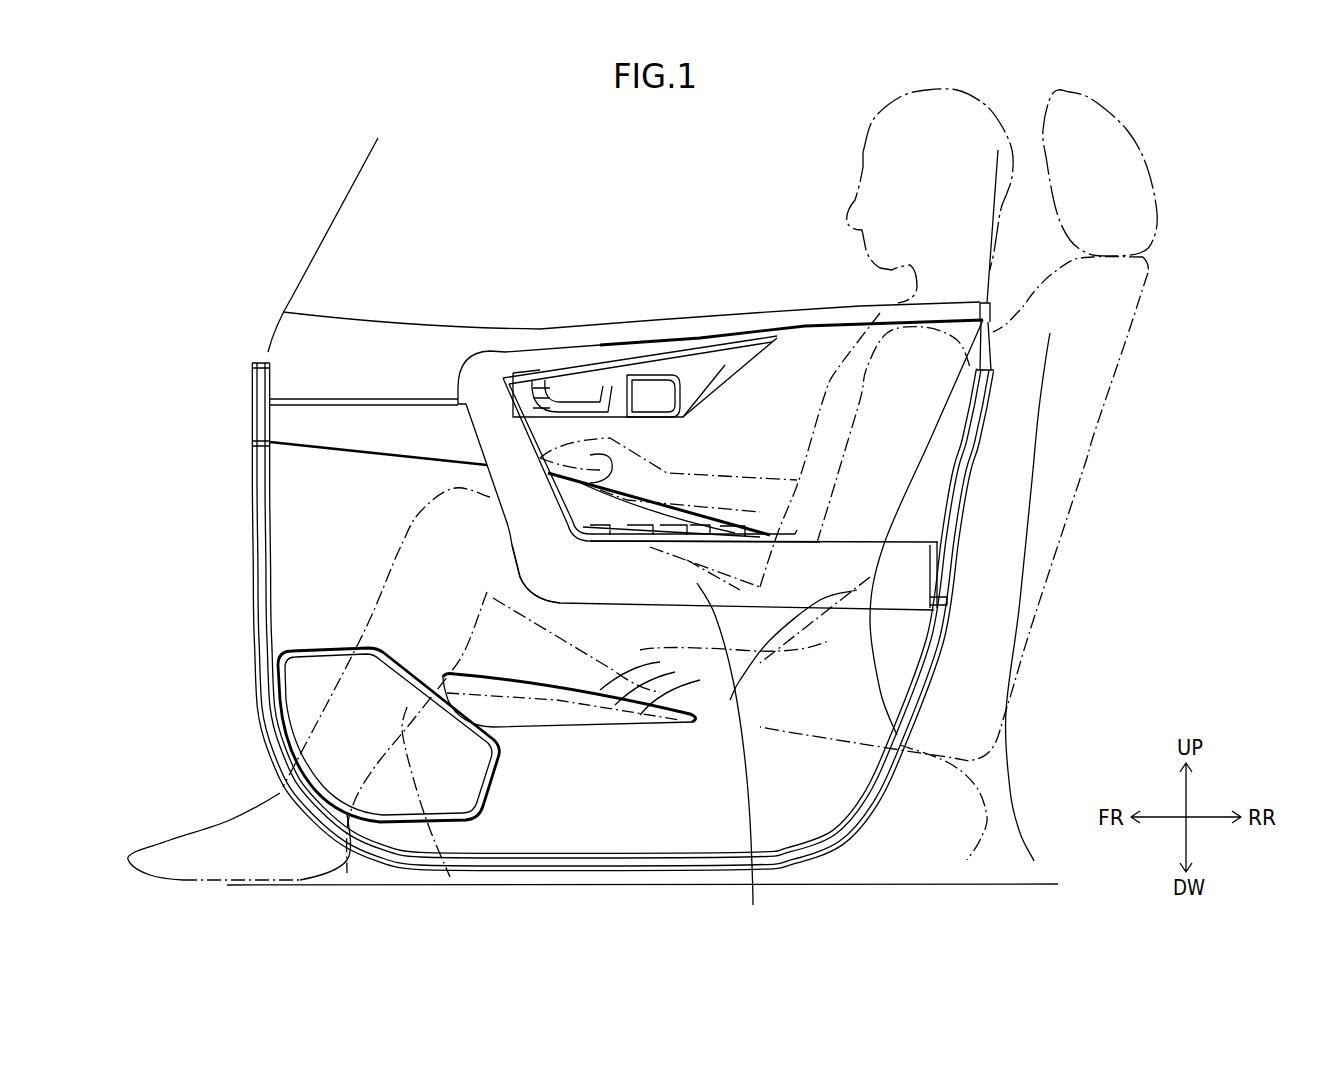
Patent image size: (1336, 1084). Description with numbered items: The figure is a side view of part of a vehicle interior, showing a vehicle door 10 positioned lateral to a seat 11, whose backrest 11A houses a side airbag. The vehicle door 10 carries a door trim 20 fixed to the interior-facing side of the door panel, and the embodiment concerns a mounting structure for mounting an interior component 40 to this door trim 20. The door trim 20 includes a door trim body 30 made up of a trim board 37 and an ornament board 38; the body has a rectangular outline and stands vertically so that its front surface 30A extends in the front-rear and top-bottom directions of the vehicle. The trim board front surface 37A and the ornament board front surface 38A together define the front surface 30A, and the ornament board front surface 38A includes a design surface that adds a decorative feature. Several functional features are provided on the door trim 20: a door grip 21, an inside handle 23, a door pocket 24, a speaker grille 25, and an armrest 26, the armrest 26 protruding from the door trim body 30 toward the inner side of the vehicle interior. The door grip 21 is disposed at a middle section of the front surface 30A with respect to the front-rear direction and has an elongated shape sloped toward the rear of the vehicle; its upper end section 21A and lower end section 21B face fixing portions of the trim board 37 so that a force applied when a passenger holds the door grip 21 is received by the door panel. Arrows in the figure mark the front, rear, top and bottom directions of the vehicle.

The vehicle door 10 is at (222, 195).
The seat 11 is at (1155, 326).
The backrest 11A is at (1087, 420).
The door trim 20 is at (228, 371).
The door grip 21 is at (468, 478).
The upper end section 21A is at (485, 415).
The lower end section 21B is at (513, 580).
The inside handle 23 is at (597, 405).
The door pocket 24 is at (535, 722).
The speaker grille 25 is at (455, 772).
The armrest 26 is at (900, 545).
The door trim body 30 is at (832, 233).
The front surface 30A is at (703, 233).
The trim board 37 is at (738, 291).
The trim board front surface 37A is at (623, 330).
The ornament board 38 is at (810, 310).
The ornament board front surface 38A is at (727, 400).
The interior component 40 is at (777, 761).